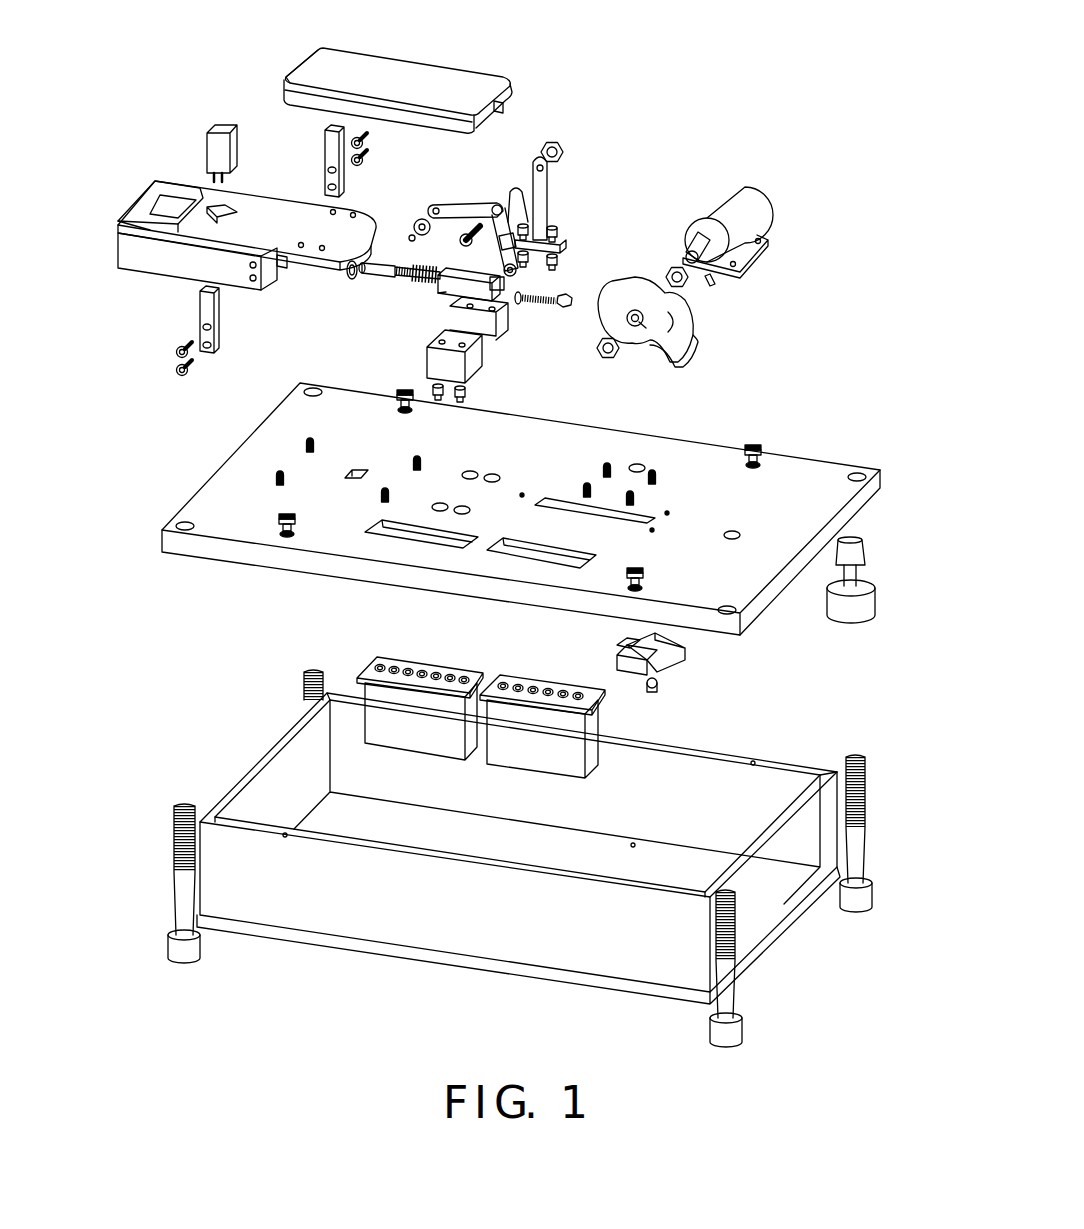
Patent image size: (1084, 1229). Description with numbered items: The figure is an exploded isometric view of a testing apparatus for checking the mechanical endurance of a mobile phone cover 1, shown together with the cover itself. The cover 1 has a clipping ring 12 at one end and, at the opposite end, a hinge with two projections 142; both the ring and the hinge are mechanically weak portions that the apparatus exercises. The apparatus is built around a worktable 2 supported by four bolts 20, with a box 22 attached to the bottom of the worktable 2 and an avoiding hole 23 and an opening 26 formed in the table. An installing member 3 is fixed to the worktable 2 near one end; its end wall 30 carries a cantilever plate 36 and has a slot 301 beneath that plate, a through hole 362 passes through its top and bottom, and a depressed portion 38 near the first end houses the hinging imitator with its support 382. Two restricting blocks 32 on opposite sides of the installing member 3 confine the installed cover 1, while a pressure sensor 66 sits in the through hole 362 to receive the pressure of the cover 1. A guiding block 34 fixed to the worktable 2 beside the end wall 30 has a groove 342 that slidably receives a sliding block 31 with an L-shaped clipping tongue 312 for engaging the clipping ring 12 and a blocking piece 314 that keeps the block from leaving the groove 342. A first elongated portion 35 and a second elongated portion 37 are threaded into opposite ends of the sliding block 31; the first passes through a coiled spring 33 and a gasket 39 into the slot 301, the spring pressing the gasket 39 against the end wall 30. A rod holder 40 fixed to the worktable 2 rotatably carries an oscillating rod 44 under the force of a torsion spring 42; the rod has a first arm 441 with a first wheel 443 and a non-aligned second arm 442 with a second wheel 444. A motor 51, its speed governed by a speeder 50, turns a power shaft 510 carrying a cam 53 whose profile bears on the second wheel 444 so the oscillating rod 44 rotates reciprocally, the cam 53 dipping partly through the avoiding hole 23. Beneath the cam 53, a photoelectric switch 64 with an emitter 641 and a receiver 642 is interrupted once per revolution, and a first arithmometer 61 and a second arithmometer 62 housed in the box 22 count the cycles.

The cover 1 is at (426, 57).
The clipping ring 12 is at (504, 105).
The projections 142 is at (290, 88).
The worktable 2 is at (800, 470).
The bolts 20 is at (860, 847).
The box 22 is at (628, 908).
The avoiding hole 23 is at (570, 505).
The opening 26 is at (350, 475).
The installing member 3 is at (108, 237).
The end wall 30 is at (268, 300).
The slot 301 is at (283, 270).
The sliding block 31 is at (460, 267).
The clipping tongue 312 is at (497, 284).
The blocking piece 314 is at (441, 297).
The restricting blocks 32 is at (205, 301).
The coiled spring 33 is at (420, 298).
The guiding block 34 is at (472, 373).
The groove 342 is at (490, 337).
The first elongated portion 35 is at (392, 254).
The cantilever plate 36 is at (300, 215).
The through hole 362 is at (228, 206).
The second elongated portion 37 is at (553, 303).
The depressed portion 38 is at (172, 208).
The support 382 is at (157, 204).
The gasket 39 is at (352, 282).
The rod holder 40 is at (547, 188).
The torsion spring 42 is at (512, 194).
The oscillating rod 44 is at (479, 200).
The first arm 441 is at (446, 206).
The second arm 442 is at (512, 282).
The first wheel 443 is at (420, 219).
The second wheel 444 is at (520, 273).
The speeder 50 is at (866, 548).
The motor 51 is at (752, 207).
The power shaft 510 is at (700, 240).
The cam 53 is at (690, 335).
The first arithmometer 61 is at (418, 723).
The second arithmometer 62 is at (530, 750).
The photoelectric switch 64 is at (698, 656).
The emitter 641 is at (620, 662).
The receiver 642 is at (630, 645).
The pressure sensor 66 is at (216, 130).